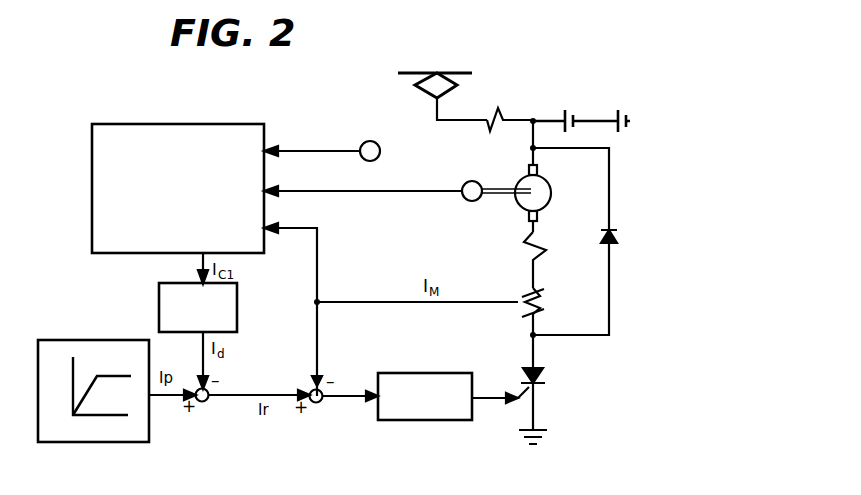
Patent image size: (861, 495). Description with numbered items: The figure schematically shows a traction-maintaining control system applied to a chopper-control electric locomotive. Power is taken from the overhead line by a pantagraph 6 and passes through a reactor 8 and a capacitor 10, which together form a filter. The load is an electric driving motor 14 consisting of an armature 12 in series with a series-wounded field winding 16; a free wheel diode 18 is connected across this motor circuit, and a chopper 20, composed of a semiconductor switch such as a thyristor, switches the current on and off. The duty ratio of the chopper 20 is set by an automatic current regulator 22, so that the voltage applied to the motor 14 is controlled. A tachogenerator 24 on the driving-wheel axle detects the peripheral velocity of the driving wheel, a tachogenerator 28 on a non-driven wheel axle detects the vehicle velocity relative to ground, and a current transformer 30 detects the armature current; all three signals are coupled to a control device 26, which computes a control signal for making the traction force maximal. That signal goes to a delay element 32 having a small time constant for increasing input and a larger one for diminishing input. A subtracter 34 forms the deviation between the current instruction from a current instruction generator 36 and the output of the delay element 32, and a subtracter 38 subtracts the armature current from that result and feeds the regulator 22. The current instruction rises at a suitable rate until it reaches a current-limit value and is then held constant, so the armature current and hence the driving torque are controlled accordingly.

The pantagraph 6 is at (415, 87).
The reactor 8 is at (498, 108).
The capacitor 10 is at (572, 108).
The armature 12 is at (552, 184).
The driving motor 14 is at (578, 219).
The series-wounded field winding 16 is at (526, 240).
The free wheel diode 18 is at (616, 228).
The chopper 20 is at (546, 382).
The automatic current regulator 22 is at (412, 373).
The tachogenerator 24 is at (472, 181).
The control device 26 is at (155, 124).
The tachogenerator 28 is at (381, 148).
The current transformer 30 is at (546, 298).
The delay element 32 is at (238, 302).
The subtracter 34 is at (207, 401).
The current instruction generator 36 is at (86, 340).
The subtracter 38 is at (321, 402).